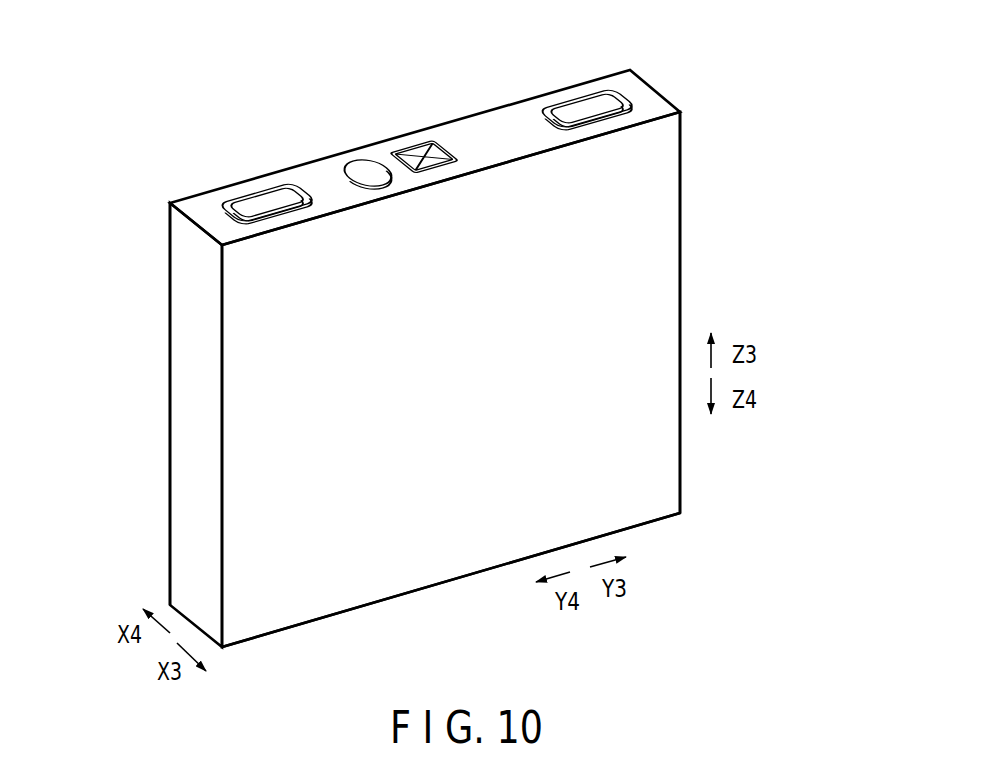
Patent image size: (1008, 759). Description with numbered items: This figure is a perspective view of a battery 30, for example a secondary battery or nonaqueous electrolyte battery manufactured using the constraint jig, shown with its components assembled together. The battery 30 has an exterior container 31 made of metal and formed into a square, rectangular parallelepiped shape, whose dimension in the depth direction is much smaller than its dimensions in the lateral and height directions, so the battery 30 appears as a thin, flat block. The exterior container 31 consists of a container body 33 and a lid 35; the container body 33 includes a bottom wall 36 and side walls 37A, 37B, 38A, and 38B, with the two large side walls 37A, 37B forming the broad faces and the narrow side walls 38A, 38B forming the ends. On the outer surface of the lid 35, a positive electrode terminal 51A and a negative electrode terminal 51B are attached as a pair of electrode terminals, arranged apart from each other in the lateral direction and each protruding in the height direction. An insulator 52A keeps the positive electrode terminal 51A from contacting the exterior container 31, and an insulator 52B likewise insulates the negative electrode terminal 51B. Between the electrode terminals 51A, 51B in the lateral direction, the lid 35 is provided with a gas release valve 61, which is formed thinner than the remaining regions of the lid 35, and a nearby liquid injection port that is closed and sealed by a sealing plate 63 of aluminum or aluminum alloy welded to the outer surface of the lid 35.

The battery 30 is at (757, 223).
The exterior container 31 is at (779, 75).
The container body 33 is at (652, 168).
The lid 35 is at (663, 90).
The bottom wall 36 is at (452, 582).
The side wall 37A is at (655, 472).
The side wall 37B is at (172, 387).
The side wall 38A is at (682, 265).
The side wall 38B is at (195, 478).
The positive electrode terminal 51A is at (587, 100).
The negative electrode terminal 51B is at (262, 195).
The insulator 52A is at (625, 102).
The insulator 52B is at (227, 197).
The gas release valve 61 is at (420, 142).
The sealing plate 63 is at (368, 168).